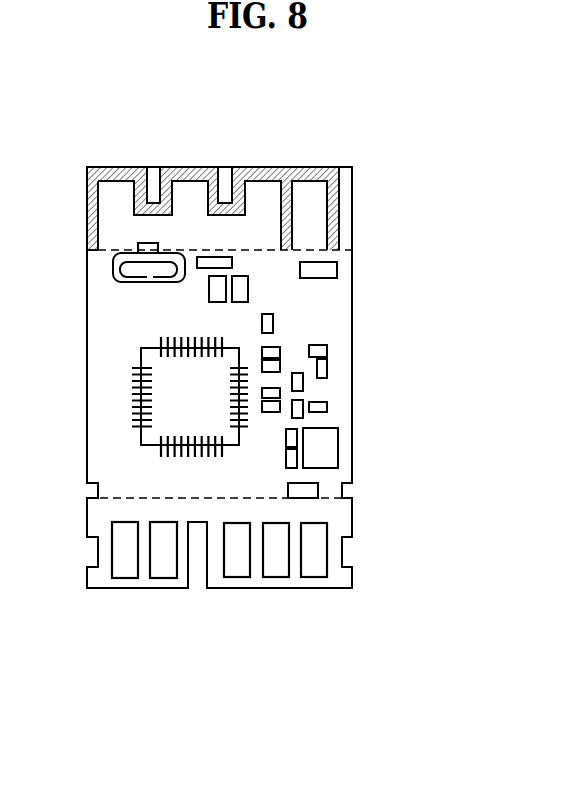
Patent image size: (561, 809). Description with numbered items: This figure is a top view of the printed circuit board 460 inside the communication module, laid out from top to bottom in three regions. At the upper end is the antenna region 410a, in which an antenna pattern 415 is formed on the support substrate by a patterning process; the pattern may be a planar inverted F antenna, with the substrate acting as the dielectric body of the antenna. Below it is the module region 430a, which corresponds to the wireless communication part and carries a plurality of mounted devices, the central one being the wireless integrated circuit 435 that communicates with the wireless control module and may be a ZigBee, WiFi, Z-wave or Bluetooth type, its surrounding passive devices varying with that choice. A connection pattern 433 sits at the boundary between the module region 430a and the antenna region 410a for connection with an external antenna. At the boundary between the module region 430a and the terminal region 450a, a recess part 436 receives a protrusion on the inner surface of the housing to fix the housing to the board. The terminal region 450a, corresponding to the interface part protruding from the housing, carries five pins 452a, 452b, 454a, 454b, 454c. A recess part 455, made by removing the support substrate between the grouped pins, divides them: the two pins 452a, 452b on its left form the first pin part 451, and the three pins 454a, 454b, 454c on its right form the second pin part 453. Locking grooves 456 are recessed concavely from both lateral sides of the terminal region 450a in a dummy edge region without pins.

The electronic module 460 is at (293, 142).
The antenna pattern 415 is at (117, 167).
The antenna region 410a is at (347, 200).
The module region 430a is at (340, 355).
The connection pattern 433 is at (330, 268).
The wireless integrated circuit 435 is at (210, 413).
The recess part 436 is at (344, 490).
The locking groove 456 is at (343, 548).
The terminal region 450a is at (352, 569).
The first pin part 451 is at (97, 577).
The pin 452a is at (122, 573).
The pin 452b is at (160, 570).
The recess part 455 is at (200, 572).
The pin 454a is at (238, 572).
The pin 454b is at (279, 572).
The pin 454c is at (317, 572).
The second pin part 453 is at (338, 577).